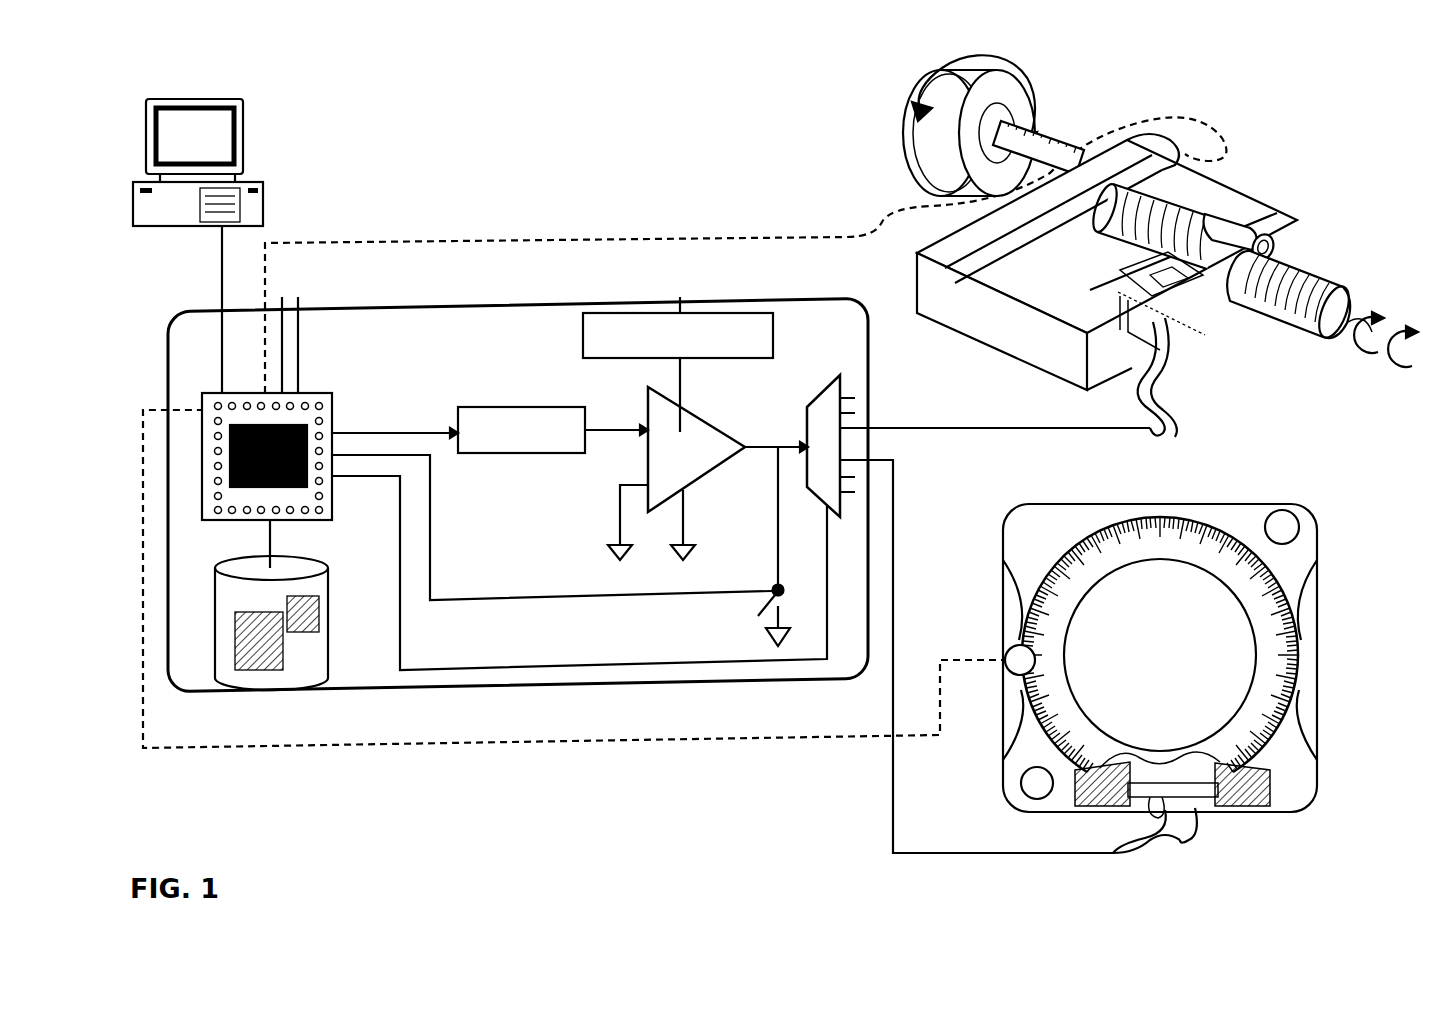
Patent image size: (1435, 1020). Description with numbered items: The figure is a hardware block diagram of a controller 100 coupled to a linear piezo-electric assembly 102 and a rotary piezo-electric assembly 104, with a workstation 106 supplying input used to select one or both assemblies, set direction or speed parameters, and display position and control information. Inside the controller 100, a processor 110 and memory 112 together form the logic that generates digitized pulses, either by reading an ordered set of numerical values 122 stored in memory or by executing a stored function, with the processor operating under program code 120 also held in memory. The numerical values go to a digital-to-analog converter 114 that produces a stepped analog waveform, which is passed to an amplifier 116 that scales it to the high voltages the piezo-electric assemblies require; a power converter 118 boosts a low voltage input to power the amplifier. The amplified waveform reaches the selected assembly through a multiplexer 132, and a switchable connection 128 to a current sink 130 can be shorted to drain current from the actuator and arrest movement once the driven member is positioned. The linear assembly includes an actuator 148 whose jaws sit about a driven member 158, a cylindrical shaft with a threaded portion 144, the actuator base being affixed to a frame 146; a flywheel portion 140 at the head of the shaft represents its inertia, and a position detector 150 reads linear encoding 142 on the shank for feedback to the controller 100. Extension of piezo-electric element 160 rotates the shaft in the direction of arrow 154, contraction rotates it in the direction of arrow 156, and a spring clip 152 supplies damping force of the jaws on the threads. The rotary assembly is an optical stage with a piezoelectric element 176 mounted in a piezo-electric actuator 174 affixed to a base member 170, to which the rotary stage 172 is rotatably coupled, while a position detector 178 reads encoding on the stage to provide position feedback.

The controller 100 is at (518, 300).
The linear piezo-electric assembly 102 is at (855, 183).
The rotary piezo-electric assembly 104 is at (1025, 485).
The workstation 106 is at (237, 140).
The processor 110 is at (312, 392).
The memory 112 is at (290, 572).
The digital-to-analog converter 114 is at (522, 407).
The amplifier 116 is at (693, 430).
The power converter 118 is at (582, 332).
The program code 120 is at (312, 616).
The ordered set of numerical values 122 is at (280, 655).
The switchable connection 128 is at (776, 584).
The current sink 130 is at (766, 638).
The multiplexer 132 is at (808, 410).
The flywheel portion 140 is at (920, 112).
The linear encoding 142 is at (1045, 128).
The threaded portion 144 is at (1302, 250).
The frame 146 is at (1010, 340).
The actuator 148 is at (1228, 372).
The position detector 150 is at (1210, 158).
The spring clip 152 is at (1255, 210).
The arrow 154 is at (1350, 352).
The arrow 156 is at (1400, 365).
The driven member 158 is at (1345, 305).
The piezo-electric element 160 is at (1142, 262).
The base member 170 is at (1275, 505).
The rotary stage 172 is at (1300, 657).
The piezo-electric actuator 174 is at (1228, 826).
The piezoelectric element 176 is at (1200, 772).
The position detector 178 is at (1012, 653).